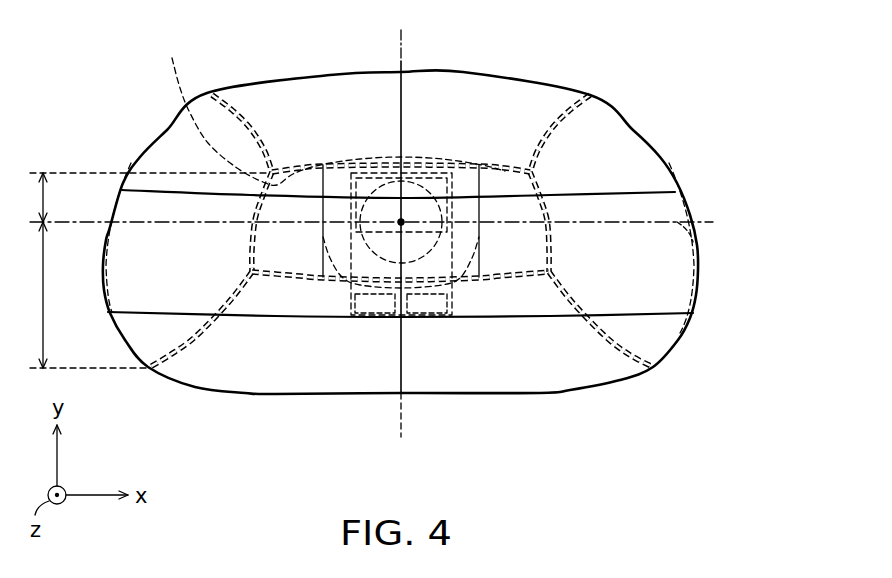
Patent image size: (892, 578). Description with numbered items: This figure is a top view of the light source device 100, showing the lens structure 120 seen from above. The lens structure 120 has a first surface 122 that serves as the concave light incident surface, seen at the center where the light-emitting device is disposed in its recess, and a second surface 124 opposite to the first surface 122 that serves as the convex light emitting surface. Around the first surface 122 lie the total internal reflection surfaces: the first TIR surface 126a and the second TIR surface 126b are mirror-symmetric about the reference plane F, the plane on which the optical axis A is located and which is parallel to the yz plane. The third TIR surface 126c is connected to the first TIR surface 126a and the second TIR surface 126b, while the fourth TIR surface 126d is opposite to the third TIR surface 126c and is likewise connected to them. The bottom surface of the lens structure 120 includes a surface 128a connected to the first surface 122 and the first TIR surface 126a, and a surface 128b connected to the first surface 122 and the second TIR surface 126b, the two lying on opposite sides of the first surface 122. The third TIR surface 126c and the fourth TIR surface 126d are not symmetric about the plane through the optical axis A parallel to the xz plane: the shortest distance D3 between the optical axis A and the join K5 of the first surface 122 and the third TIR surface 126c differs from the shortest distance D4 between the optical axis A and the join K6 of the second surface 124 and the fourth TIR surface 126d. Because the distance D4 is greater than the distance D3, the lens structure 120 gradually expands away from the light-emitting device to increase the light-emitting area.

The light source device 100 is at (766, 428).
The lens structure 120 is at (667, 70).
The first surface 122 is at (465, 183).
The second surface 124 is at (647, 175).
The first TIR surface 126a is at (607, 157).
The second TIR surface 126b is at (138, 210).
The third TIR surface 126c is at (352, 101).
The fourth TIR surface 126d is at (452, 373).
The surface 128a is at (302, 268).
The surface 128b is at (518, 270).
The join K5 is at (333, 106).
The join K6 is at (273, 393).
The optical axis A is at (401, 222).
The reference plane F is at (401, 61).
The shortest distance D3 is at (150, 197).
The shortest distance D4 is at (89, 295).